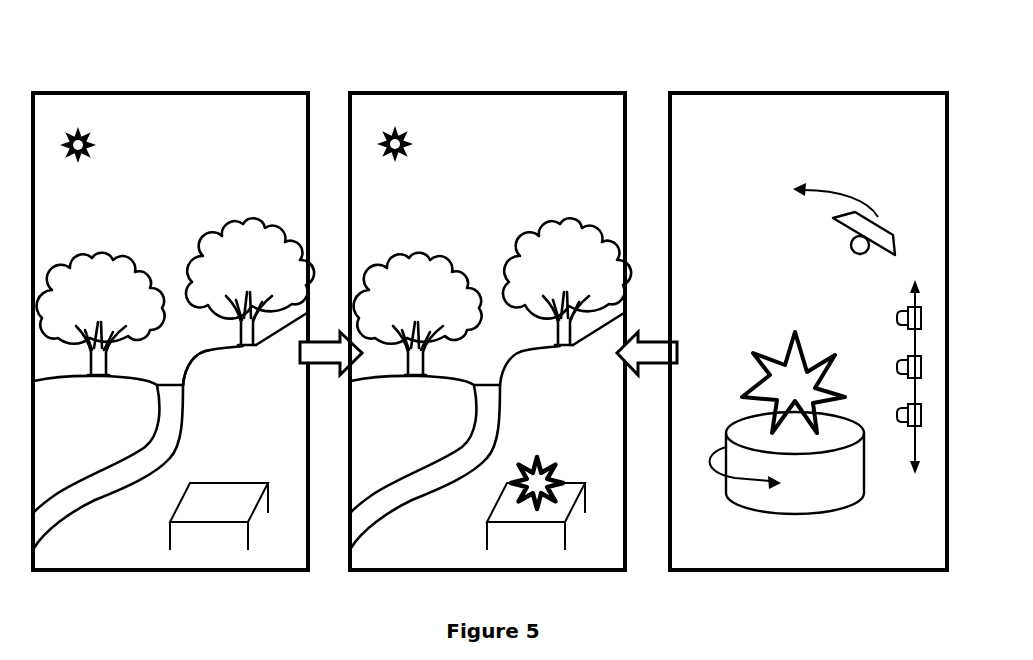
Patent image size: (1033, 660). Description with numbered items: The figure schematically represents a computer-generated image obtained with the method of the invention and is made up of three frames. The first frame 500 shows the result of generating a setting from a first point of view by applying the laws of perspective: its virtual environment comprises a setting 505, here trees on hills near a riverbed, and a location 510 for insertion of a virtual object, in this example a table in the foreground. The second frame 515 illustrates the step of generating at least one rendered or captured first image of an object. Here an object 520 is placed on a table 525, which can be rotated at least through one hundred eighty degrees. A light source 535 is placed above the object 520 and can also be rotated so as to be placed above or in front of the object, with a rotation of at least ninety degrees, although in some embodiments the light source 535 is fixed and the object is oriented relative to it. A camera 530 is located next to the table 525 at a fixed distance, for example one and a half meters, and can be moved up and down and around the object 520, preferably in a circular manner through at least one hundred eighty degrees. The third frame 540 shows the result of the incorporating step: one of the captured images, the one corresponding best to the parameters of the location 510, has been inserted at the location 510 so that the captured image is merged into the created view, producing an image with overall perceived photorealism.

The frame 500 is at (190, 106).
The setting 505 is at (200, 382).
The location 510 is at (223, 498).
The frame 540 is at (545, 108).
The frame 515 is at (852, 110).
The object 520 is at (807, 358).
The table 525 is at (752, 480).
The camera 530 is at (912, 472).
The light source 535 is at (882, 240).